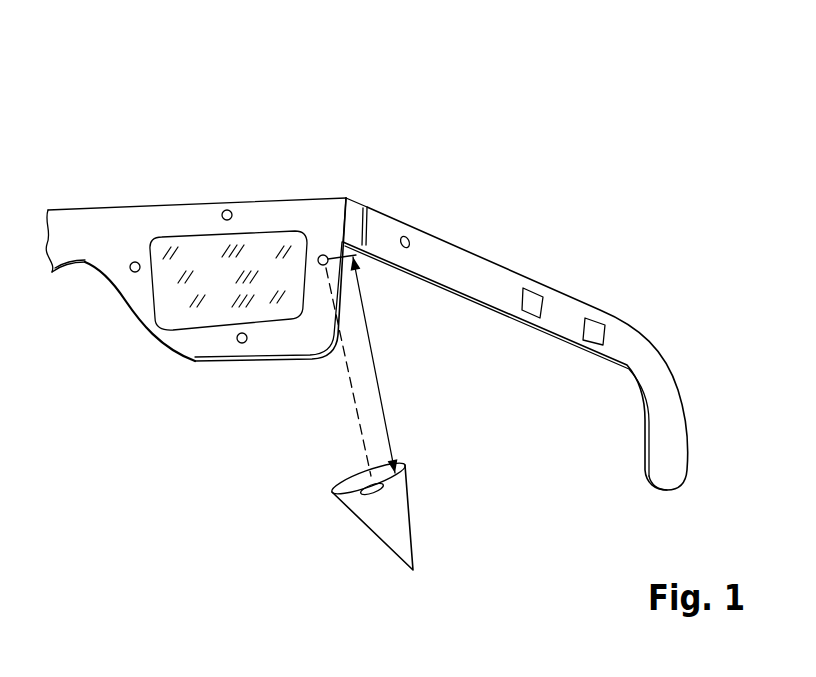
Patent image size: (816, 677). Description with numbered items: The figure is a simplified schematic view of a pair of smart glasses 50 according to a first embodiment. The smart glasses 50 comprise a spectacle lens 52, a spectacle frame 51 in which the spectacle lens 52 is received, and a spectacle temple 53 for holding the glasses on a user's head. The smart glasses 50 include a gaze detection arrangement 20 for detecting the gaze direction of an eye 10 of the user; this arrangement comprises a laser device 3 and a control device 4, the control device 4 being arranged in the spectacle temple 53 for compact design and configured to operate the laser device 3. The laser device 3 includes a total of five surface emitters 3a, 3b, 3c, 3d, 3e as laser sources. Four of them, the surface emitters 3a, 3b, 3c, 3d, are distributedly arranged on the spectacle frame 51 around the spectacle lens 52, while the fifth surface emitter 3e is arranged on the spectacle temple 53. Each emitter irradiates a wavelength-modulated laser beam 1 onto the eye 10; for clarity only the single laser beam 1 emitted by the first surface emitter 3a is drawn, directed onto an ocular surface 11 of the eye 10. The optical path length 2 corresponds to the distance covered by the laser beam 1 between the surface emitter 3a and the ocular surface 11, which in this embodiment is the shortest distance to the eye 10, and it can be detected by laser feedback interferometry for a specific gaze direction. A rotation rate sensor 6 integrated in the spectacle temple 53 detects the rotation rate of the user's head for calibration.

The laser beam 1 is at (358, 418).
The optical path length 2 is at (373, 365).
The laser device 3 is at (92, 104).
The first surface emitter 3a is at (322, 255).
The surface emitter 3b is at (241, 344).
The surface emitter 3c is at (228, 210).
The surface emitter 3d is at (136, 262).
The fifth surface emitter 3e is at (410, 238).
The control device 4 is at (597, 327).
The rotation rate sensor 6 is at (533, 298).
The eye 10 is at (365, 552).
The ocular surface 11 is at (347, 492).
The gaze detection arrangement 20 is at (400, 168).
The smart glasses 50 is at (590, 95).
The spectacle frame 51 is at (82, 232).
The spectacle lens 52 is at (178, 303).
The spectacle temple 53 is at (640, 357).